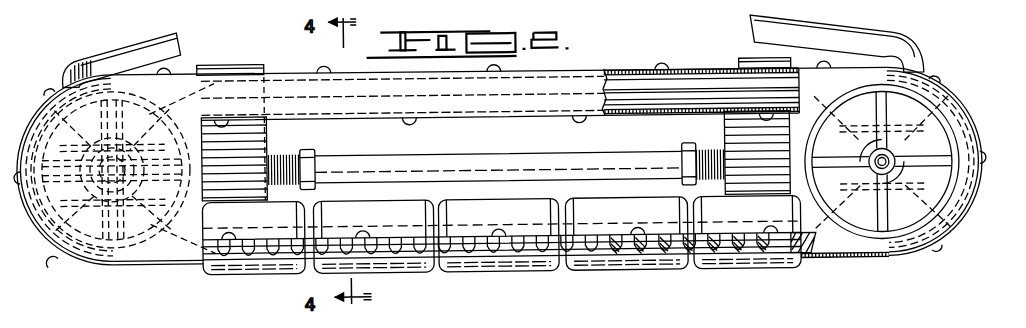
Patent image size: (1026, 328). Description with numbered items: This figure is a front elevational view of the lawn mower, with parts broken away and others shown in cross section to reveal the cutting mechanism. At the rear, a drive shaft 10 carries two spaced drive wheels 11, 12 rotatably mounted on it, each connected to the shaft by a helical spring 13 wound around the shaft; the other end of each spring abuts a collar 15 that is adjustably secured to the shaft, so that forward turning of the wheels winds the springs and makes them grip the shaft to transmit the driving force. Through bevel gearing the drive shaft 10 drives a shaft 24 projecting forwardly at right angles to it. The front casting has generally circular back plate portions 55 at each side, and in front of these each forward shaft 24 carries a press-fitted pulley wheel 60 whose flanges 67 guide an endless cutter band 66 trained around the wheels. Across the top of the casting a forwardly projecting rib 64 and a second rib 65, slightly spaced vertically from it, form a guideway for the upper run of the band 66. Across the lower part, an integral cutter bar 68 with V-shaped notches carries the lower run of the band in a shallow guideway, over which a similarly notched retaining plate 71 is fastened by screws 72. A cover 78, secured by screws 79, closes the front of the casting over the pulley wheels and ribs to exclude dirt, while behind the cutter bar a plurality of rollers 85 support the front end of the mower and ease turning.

The drive shaft 10 is at (412, 158).
The drive wheel 11 is at (238, 62).
The drive wheel 12 is at (779, 59).
The helical spring 13 is at (291, 148).
The collar 15 is at (318, 143).
The shaft 24 is at (896, 164).
The back plate portion 55 is at (125, 44).
The pulley wheel 60 is at (867, 184).
The rib 64 is at (690, 80).
The second rib 65 is at (700, 105).
The endless cutter band 66 is at (672, 95).
The flange 67 is at (950, 120).
The cutter bar 68 is at (662, 258).
The retaining plate 71 is at (633, 232).
The screw 72 is at (362, 232).
The cover 78 is at (160, 263).
The screw 79 is at (53, 80).
The roller 85 is at (520, 190).